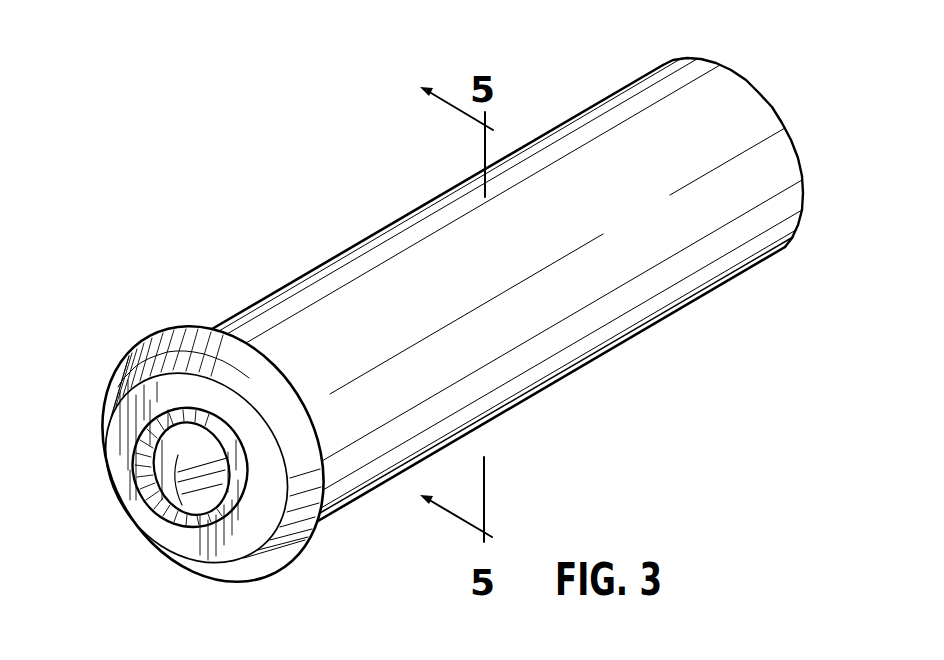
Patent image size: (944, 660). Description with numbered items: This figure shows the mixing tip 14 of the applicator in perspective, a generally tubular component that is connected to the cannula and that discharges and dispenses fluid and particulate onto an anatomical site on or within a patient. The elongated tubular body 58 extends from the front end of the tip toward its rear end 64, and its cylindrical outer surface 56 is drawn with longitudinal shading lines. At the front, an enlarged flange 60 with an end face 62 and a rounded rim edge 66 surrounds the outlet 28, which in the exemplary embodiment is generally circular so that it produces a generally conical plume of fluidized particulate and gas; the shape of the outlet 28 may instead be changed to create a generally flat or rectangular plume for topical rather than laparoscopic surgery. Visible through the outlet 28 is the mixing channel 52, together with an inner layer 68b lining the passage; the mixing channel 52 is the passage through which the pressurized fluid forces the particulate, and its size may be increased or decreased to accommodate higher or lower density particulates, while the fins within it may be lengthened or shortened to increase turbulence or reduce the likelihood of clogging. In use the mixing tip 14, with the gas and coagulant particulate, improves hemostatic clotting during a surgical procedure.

The mixing tip 14 is at (438, 318).
The outlet 28 is at (172, 495).
The mixing channel 52 is at (183, 446).
The outer surface 56 is at (391, 217).
The tubular body 58 is at (678, 88).
The front flange 60 is at (198, 340).
The end face 62 is at (190, 542).
The rear end 64 is at (806, 213).
The rim edge 66 is at (315, 528).
The inner layer 68b is at (190, 467).